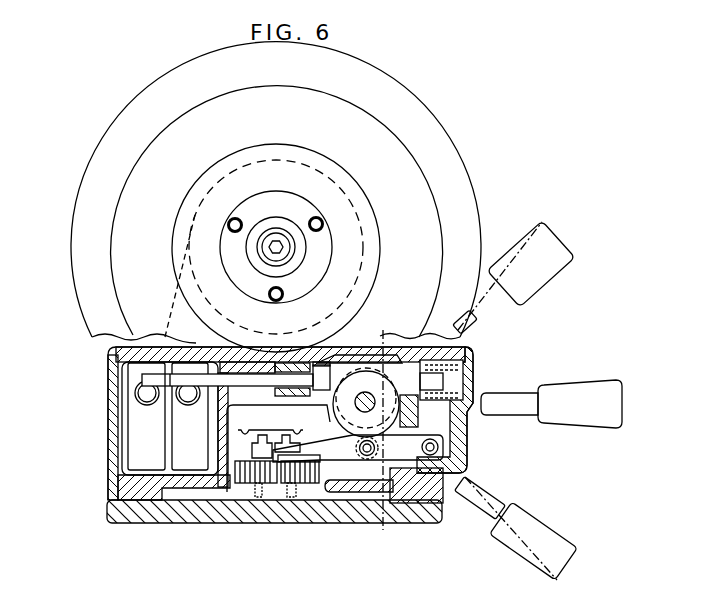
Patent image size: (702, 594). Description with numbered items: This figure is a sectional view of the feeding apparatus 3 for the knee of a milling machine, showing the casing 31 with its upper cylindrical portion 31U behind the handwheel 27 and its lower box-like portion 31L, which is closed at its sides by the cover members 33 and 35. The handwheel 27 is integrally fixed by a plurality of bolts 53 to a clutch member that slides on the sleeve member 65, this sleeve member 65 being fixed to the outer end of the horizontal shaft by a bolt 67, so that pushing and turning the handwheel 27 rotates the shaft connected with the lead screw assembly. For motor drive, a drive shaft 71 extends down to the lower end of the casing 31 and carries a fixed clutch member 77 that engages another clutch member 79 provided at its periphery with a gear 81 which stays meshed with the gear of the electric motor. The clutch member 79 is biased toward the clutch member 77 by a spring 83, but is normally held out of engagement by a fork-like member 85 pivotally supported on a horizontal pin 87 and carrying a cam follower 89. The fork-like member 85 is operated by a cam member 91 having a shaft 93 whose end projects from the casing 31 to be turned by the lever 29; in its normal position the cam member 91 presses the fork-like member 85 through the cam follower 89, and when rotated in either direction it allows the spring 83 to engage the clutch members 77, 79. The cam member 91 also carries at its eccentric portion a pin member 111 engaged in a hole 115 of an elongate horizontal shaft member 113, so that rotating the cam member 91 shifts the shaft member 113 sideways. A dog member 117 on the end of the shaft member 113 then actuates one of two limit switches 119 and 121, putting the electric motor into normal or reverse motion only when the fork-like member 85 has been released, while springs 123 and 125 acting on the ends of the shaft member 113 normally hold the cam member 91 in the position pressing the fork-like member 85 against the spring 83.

The feeding apparatus 3 is at (60, 305).
The handwheel 27 is at (457, 167).
The lever 29 is at (529, 413).
The casing 31 is at (198, 342).
The upper cylindrical portion 31U is at (184, 247).
The lower box-like portion 31L is at (180, 484).
The cover member 33 is at (468, 470).
The cover member 35 is at (115, 498).
The bolts 53 is at (321, 216).
The sleeve member 65 is at (280, 221).
The bolt 67 is at (284, 247).
The drive shaft 71 is at (291, 492).
The clutch member 77 is at (262, 433).
The clutch member 79 is at (233, 486).
The gear 81 is at (245, 484).
The spring 83 is at (258, 492).
The fork-like member 85 is at (403, 453).
The pin 87 is at (460, 450).
The cam follower 89 is at (383, 470).
The cam member 91 is at (316, 444).
The shaft 93 is at (405, 439).
The pin member 111 is at (388, 345).
The shaft member 113 is at (350, 370).
The hole 115 is at (430, 346).
The dog member 117 is at (127, 367).
The limit switch 119 is at (140, 437).
The limit switch 121 is at (178, 456).
The spring 123 is at (280, 364).
The spring 125 is at (448, 381).